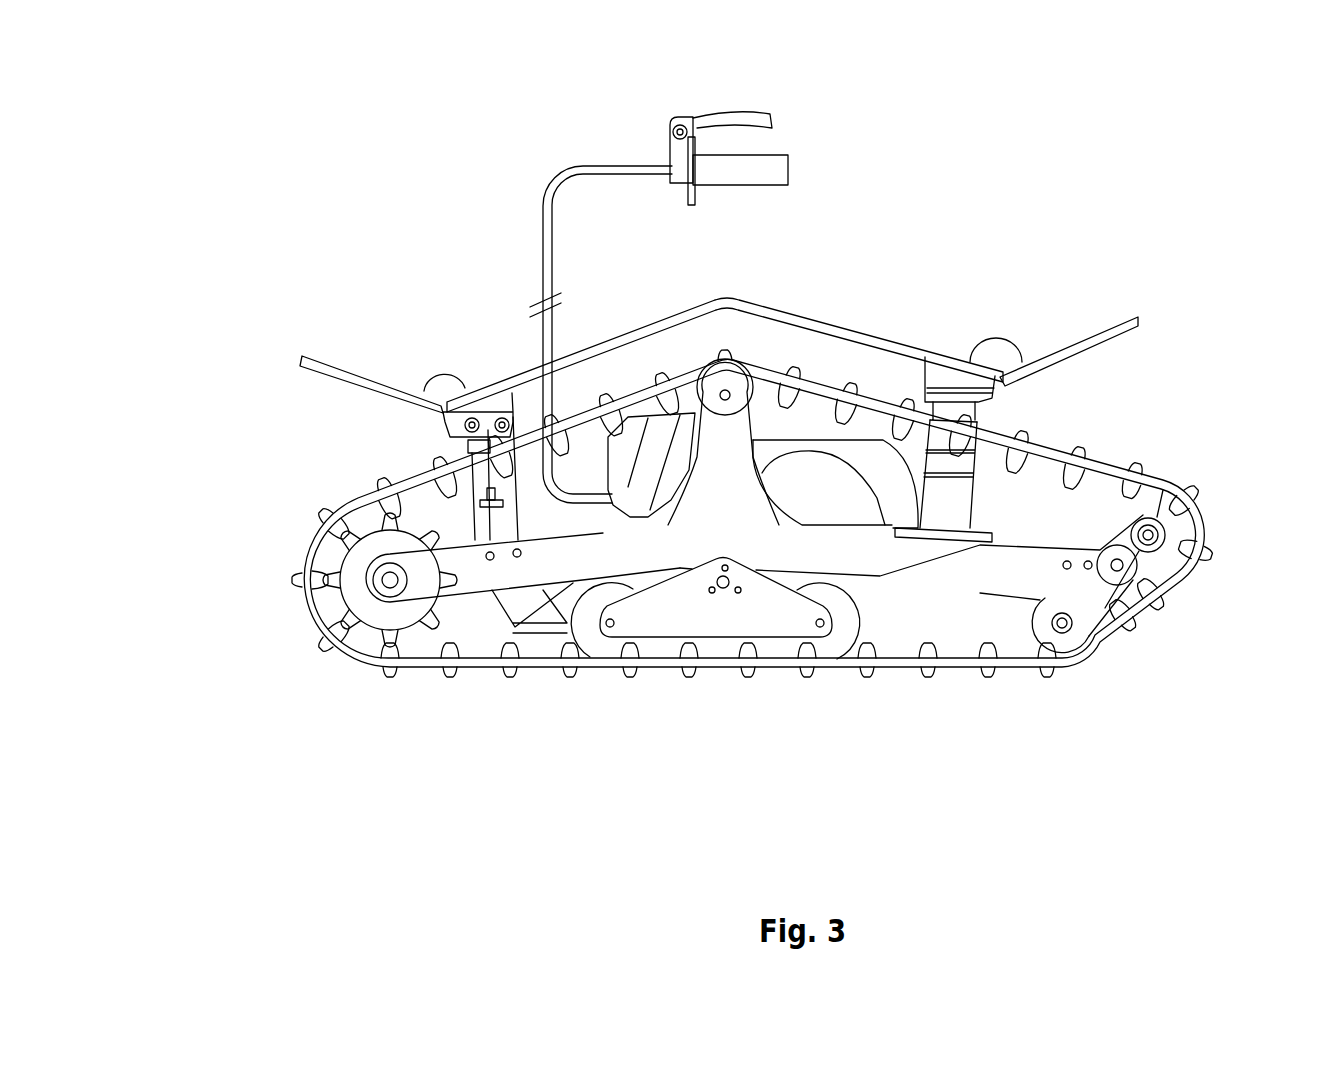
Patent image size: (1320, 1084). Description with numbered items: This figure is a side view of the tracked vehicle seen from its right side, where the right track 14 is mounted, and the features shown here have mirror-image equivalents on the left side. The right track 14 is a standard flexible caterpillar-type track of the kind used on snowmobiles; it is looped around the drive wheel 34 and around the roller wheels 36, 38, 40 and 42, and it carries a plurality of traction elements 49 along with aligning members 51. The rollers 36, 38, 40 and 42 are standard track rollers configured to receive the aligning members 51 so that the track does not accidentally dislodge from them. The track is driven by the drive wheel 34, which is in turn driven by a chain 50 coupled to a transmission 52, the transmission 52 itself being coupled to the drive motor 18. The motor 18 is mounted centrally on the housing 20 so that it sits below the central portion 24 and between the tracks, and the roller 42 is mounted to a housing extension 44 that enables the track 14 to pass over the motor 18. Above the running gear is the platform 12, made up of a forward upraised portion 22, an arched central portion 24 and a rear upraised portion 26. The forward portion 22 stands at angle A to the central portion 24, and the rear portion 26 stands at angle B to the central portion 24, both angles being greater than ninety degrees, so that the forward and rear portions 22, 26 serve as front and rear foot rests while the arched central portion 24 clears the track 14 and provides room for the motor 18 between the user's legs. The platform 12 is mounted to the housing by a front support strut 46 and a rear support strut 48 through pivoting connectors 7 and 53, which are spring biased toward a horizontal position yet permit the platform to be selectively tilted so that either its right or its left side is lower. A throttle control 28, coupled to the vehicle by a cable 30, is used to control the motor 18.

The pivoting connector 7 is at (980, 400).
The platform 12 is at (618, 335).
The right track 14 is at (1147, 608).
The drive motor 18 is at (763, 451).
The housing 20 is at (585, 550).
The forward upraised portion 22 is at (1108, 328).
The central portion 24 is at (763, 307).
The rear upraised portion 26 is at (330, 368).
The throttle control 28 is at (750, 153).
The cable 30 is at (585, 172).
The drive wheel 34 is at (333, 604).
The roller wheel 36 is at (617, 650).
The roller wheel 38 is at (1077, 643).
The roller wheel 40 is at (1177, 513).
The roller wheel 42 is at (750, 388).
The housing extension 44 is at (546, 556).
The front support strut 46 is at (977, 463).
The rear support strut 48 is at (462, 486).
The traction elements 49 is at (928, 682).
The chain 50 is at (477, 610).
The aligning members 51 is at (1077, 470).
The transmission 52 is at (608, 520).
The pivoting connector 53 is at (449, 428).
The angle A is at (995, 350).
The angle B is at (445, 377).